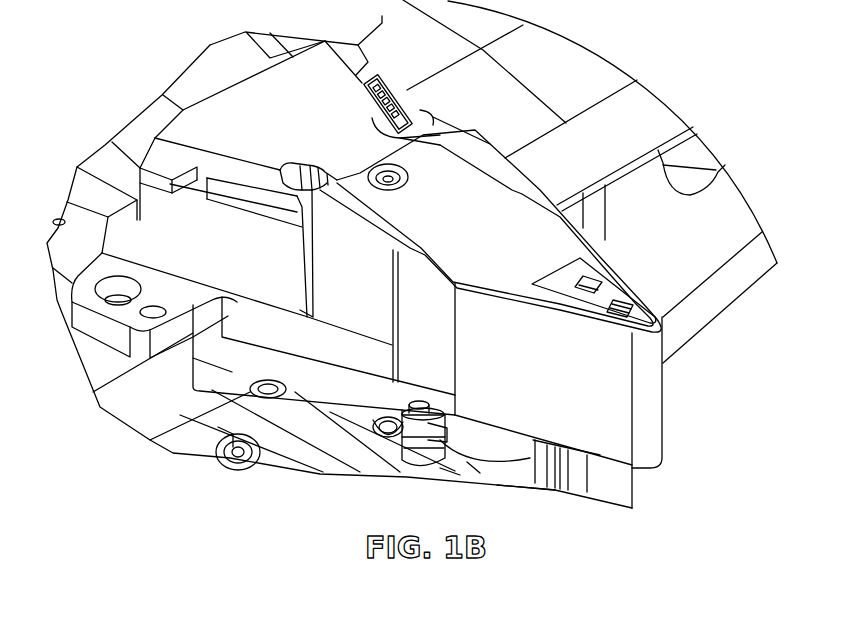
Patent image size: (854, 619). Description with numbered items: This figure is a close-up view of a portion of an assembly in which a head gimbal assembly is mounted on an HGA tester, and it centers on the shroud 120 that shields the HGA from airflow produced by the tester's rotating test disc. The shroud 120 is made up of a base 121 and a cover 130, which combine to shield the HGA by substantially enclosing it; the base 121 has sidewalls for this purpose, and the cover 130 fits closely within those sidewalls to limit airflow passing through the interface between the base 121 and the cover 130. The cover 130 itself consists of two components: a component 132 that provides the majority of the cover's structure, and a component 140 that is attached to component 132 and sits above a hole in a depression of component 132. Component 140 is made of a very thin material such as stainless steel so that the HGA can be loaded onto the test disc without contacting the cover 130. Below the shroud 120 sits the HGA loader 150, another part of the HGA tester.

The shroud 120 is at (585, 363).
The base 121 is at (506, 357).
The shroud cover 130 is at (527, 228).
The component 132 is at (487, 227).
The component 140 is at (611, 288).
The HGA loader 150 is at (505, 442).